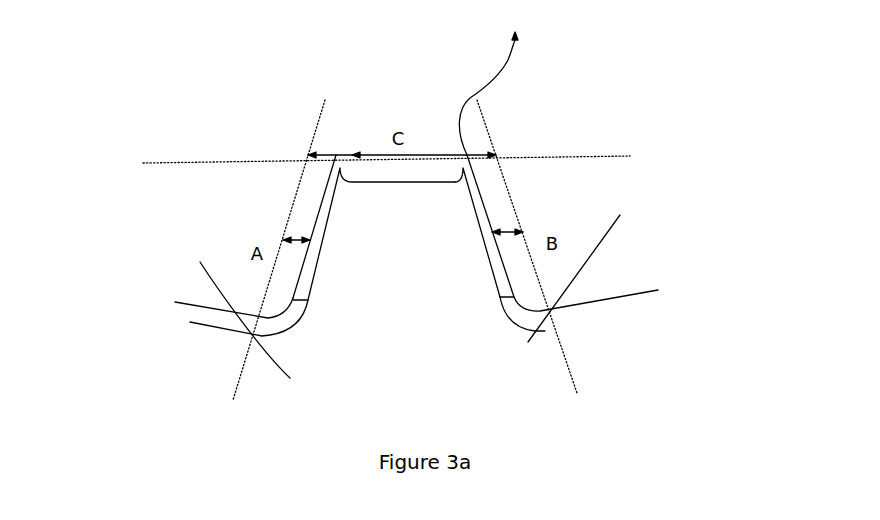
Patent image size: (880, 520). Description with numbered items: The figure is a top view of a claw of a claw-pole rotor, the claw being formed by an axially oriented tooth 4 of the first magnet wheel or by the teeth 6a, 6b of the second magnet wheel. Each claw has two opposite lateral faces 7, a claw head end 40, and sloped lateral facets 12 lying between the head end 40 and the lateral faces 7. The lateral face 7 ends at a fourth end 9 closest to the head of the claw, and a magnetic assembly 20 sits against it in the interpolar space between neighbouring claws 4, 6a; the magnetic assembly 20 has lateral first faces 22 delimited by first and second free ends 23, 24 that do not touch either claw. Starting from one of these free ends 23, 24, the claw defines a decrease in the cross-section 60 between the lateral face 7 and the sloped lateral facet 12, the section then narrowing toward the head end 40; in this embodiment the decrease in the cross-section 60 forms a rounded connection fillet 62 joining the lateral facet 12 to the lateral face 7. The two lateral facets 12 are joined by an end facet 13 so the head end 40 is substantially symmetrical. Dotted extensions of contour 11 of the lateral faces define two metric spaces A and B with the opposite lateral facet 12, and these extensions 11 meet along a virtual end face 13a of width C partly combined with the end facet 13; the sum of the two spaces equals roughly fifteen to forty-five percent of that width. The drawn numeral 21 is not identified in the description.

The tooth 4 is at (187, 286).
The tooth 6a is at (187, 286).
The third claw 6b is at (200, 262).
The lateral face 7 is at (240, 363).
The fourth end 9 is at (657, 241).
The extension of contour 11 is at (307, 130).
The lateral facet 12 is at (309, 218).
The end facet 13 is at (355, 155).
The virtual end face 13a is at (488, 172).
The magnetic assembly 20 is at (406, 273).
The flange foot 21 is at (190, 322).
The first face 22 is at (252, 386).
The first free end 23 is at (303, 259).
The second free end 24 is at (222, 332).
The claw head end 40 is at (433, 155).
The decrease in the cross-section 60 is at (657, 241).
The rounded connection fillet 62 is at (620, 215).